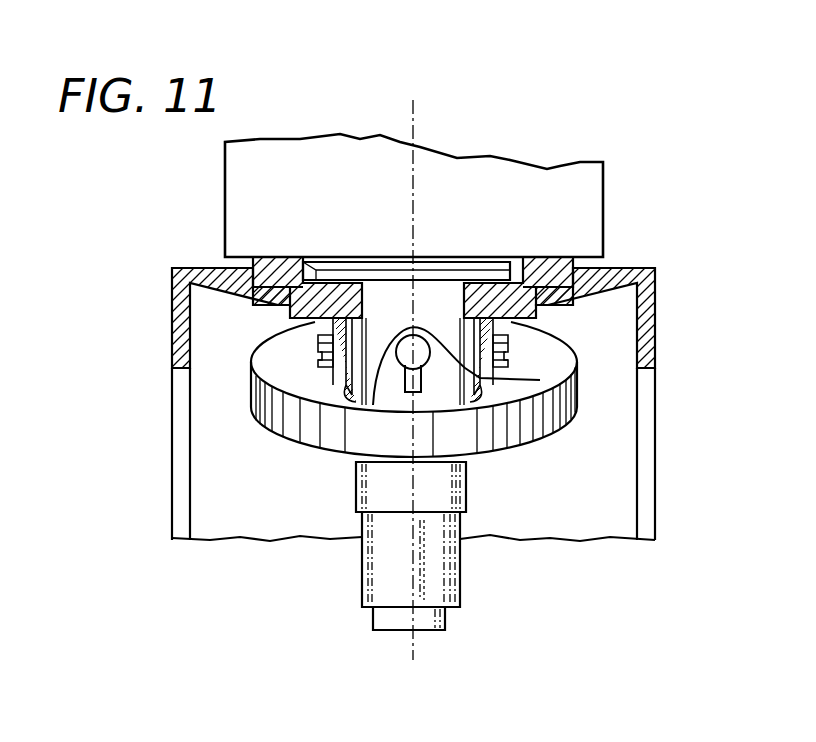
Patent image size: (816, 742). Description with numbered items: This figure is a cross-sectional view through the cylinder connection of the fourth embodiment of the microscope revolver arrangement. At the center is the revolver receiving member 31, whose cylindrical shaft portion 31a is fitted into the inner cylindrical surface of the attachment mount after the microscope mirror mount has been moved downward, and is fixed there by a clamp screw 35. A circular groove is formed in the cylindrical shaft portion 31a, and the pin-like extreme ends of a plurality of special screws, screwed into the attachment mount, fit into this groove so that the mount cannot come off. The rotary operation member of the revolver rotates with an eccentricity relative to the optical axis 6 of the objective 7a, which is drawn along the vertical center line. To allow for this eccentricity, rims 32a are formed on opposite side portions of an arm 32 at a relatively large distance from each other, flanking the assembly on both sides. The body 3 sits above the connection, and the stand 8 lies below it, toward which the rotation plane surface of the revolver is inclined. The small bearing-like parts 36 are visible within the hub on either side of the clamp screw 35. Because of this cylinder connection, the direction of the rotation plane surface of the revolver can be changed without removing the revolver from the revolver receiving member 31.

The housing body 3 is at (532, 172).
The revolver receiving member 31 is at (291, 258).
The cylindrical shaft portion 31a is at (362, 318).
The arm 32 is at (201, 272).
The rims 32a is at (177, 346).
The clamp screw 35 is at (427, 378).
The bearing 36 is at (320, 344).
The optical axis 6 is at (413, 648).
The objective 7a is at (452, 582).
The stand 8 is at (262, 517).